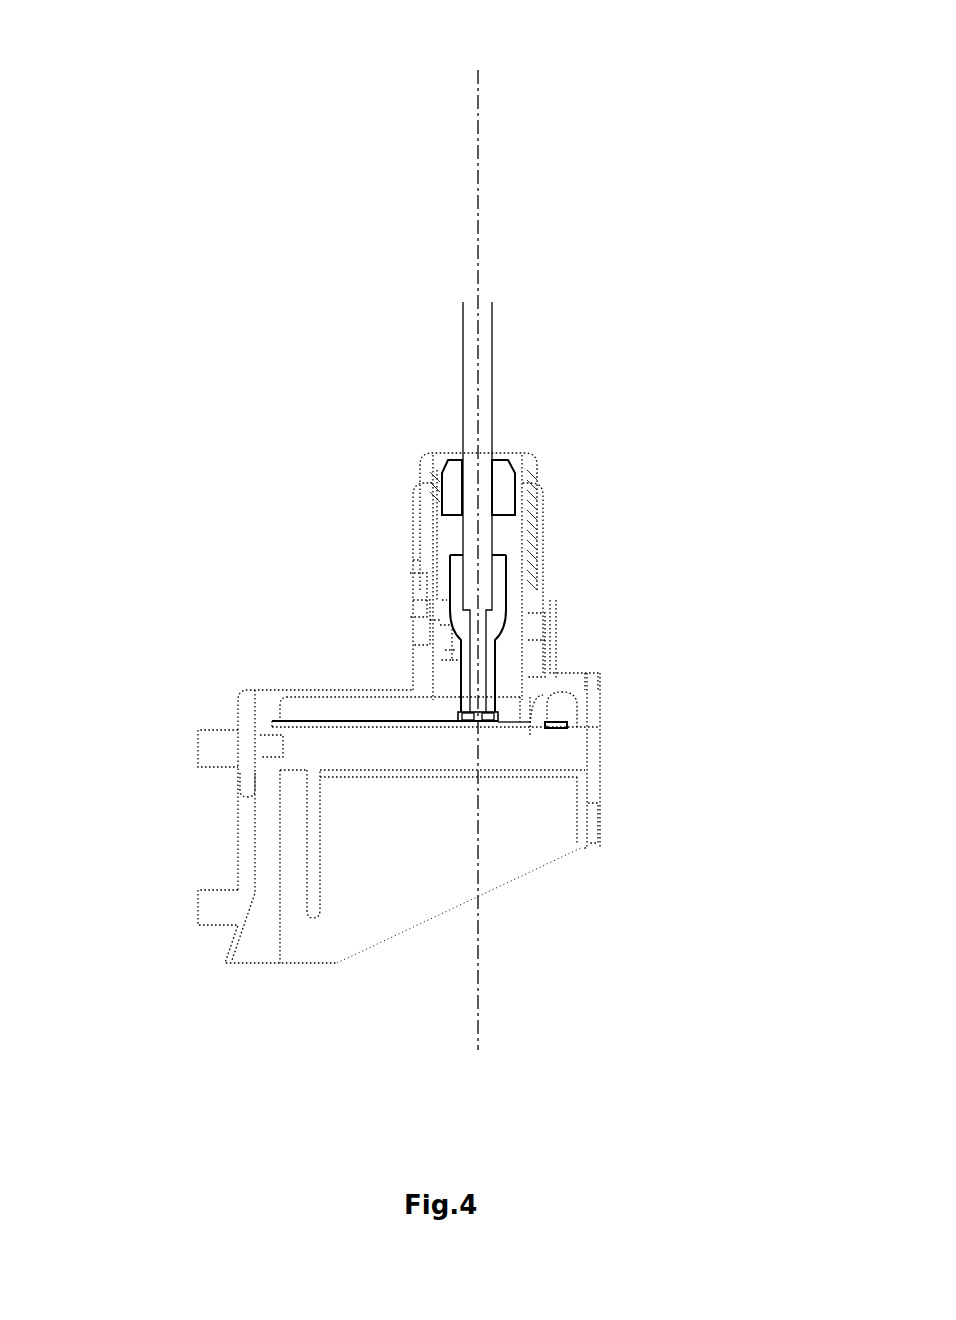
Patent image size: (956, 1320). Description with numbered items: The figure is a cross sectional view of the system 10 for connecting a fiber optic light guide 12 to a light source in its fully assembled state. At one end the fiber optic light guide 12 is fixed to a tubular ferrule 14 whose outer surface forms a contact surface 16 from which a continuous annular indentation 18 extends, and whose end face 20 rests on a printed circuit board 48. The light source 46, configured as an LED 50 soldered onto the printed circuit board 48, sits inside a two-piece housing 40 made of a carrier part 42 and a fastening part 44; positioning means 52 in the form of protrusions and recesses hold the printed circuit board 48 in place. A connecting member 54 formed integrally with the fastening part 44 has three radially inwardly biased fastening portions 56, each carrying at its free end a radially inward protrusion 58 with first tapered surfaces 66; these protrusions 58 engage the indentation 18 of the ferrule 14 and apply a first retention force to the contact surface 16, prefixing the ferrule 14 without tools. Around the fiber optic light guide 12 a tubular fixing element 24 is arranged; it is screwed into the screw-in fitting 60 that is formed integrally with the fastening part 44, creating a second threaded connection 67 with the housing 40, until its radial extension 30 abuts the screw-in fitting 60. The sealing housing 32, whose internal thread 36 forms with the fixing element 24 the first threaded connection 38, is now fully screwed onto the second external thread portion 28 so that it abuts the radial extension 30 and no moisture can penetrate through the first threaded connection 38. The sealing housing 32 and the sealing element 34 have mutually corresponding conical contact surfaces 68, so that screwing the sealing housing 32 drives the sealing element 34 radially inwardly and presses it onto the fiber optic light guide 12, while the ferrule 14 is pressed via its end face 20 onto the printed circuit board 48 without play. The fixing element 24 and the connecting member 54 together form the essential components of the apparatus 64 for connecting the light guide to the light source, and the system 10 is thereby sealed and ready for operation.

The system 10 is at (298, 89).
The fiber optic light guide 12 is at (492, 333).
The ferrule 14 is at (550, 625).
The contact surface 16 is at (510, 577).
The annular indentation 18 is at (505, 645).
The end face 20 is at (505, 727).
The fixing element 24 is at (626, 656).
The second external thread portion 28 is at (548, 542).
The radial extension 30 is at (548, 593).
The sealing housing 32 is at (540, 462).
The sealing element 34 is at (505, 488).
The internal thread 36 is at (426, 567).
The first threaded connection 38 is at (426, 567).
The housing 40 is at (210, 644).
The carrier part 42 is at (540, 865).
The fastening part 44 is at (275, 690).
The light source 46 is at (508, 771).
The printed circuit board 48 is at (345, 727).
The LED 50 is at (485, 725).
The positioning means 52 is at (555, 725).
The connecting member 54 is at (528, 689).
The fastening portions 56 is at (371, 622).
The protrusion 58 is at (455, 650).
The screw-in fitting 60 is at (440, 628).
The apparatus 64 is at (207, 535).
The first tapered surfaces 66 is at (460, 658).
The second threaded connection 67 is at (440, 613).
The conical contact surfaces 68 is at (425, 478).